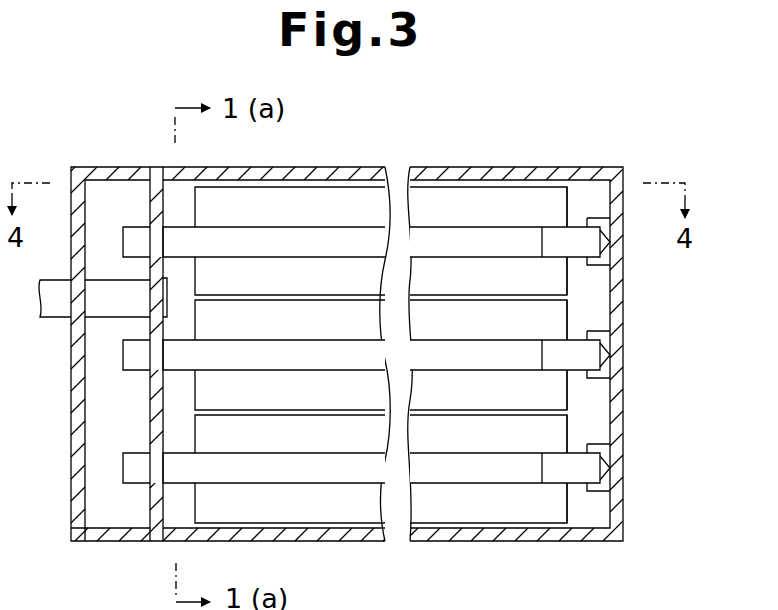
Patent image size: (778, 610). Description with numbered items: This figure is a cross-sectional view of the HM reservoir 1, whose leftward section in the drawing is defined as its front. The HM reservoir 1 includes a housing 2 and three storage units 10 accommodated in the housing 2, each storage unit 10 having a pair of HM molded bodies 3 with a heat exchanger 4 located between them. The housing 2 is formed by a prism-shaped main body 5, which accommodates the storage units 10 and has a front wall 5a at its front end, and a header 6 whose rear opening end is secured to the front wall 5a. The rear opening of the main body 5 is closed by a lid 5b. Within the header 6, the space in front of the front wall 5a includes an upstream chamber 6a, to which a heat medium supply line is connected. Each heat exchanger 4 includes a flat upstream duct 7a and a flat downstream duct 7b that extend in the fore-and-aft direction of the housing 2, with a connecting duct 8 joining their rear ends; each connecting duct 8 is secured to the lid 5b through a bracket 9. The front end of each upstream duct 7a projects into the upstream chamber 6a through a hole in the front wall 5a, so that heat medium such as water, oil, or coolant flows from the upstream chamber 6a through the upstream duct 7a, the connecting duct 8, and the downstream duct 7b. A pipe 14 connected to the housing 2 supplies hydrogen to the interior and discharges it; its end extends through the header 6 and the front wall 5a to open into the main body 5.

The HM reservoir 1 is at (610, 144).
The housing 2 is at (160, 157).
The HM molded bodies 3 is at (268, 195).
The heat exchanger 4 is at (578, 211).
The main body 5 is at (430, 533).
The front wall 5a is at (150, 398).
The lid 5b is at (623, 523).
The header 6 is at (96, 166).
The upstream chamber 6a is at (102, 520).
The upstream duct 7a is at (236, 247).
The downstream duct 7b is at (361, 355).
The connecting duct 8 is at (553, 230).
The bracket 9 is at (615, 248).
The storage unit 10 is at (176, 221).
The pipe 14 is at (52, 315).